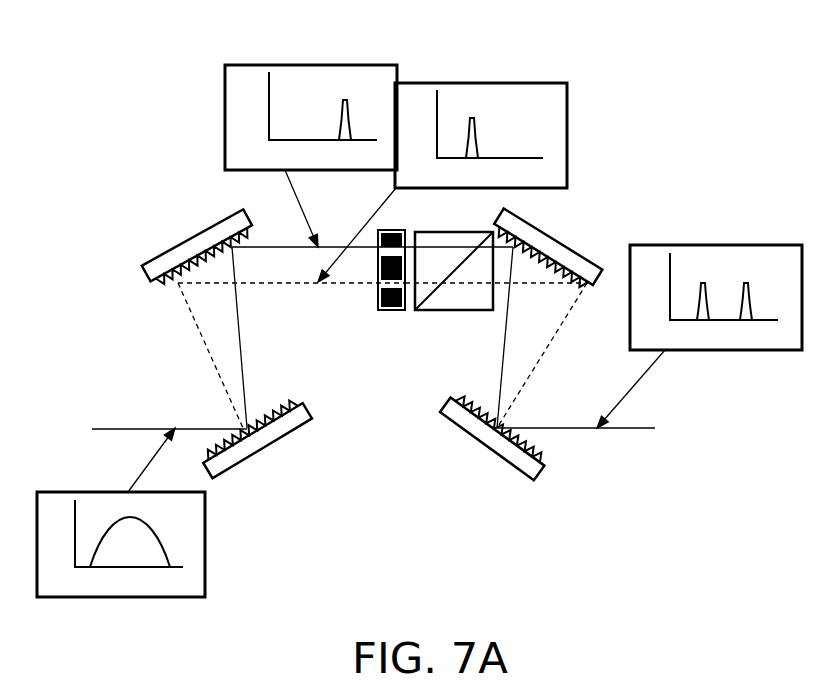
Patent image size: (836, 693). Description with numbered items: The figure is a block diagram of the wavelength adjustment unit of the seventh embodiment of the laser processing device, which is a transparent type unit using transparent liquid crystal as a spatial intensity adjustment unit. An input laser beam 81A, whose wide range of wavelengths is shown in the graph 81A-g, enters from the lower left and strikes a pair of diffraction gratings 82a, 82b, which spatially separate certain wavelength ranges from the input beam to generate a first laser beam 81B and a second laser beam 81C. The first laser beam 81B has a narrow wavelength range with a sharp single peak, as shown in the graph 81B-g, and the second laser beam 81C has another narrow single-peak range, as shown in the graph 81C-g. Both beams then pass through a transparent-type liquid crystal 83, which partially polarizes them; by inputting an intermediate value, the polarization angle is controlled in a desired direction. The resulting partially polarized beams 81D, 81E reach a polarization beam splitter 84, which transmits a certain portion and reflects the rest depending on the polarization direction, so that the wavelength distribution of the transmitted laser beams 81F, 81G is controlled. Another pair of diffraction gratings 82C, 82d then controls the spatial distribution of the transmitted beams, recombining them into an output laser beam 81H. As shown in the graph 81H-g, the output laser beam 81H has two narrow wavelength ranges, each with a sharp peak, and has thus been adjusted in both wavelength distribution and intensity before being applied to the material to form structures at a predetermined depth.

The input laser beam 81A is at (137, 428).
The graph 81A-g is at (205, 545).
The first laser beam 81B is at (272, 247).
The graph 81B-g is at (366, 64).
The second laser beam 81C is at (267, 287).
The graph 81C-g is at (536, 83).
The partially polarized beam 81D is at (408, 247).
The partially polarized beam 81E is at (408, 285).
The transmitted laser beam 81F is at (508, 235).
The transmitted laser beam 81G is at (493, 315).
The output laser beam 81H is at (565, 428).
The graph 81H-g is at (750, 217).
The diffraction grating 82a is at (242, 462).
The diffraction grating 82b is at (163, 252).
The diffraction grating 82C is at (540, 237).
The diffraction grating 82d is at (490, 465).
The transparent-type liquid crystal 83 is at (385, 312).
The polarization beam splitter 84 is at (455, 310).